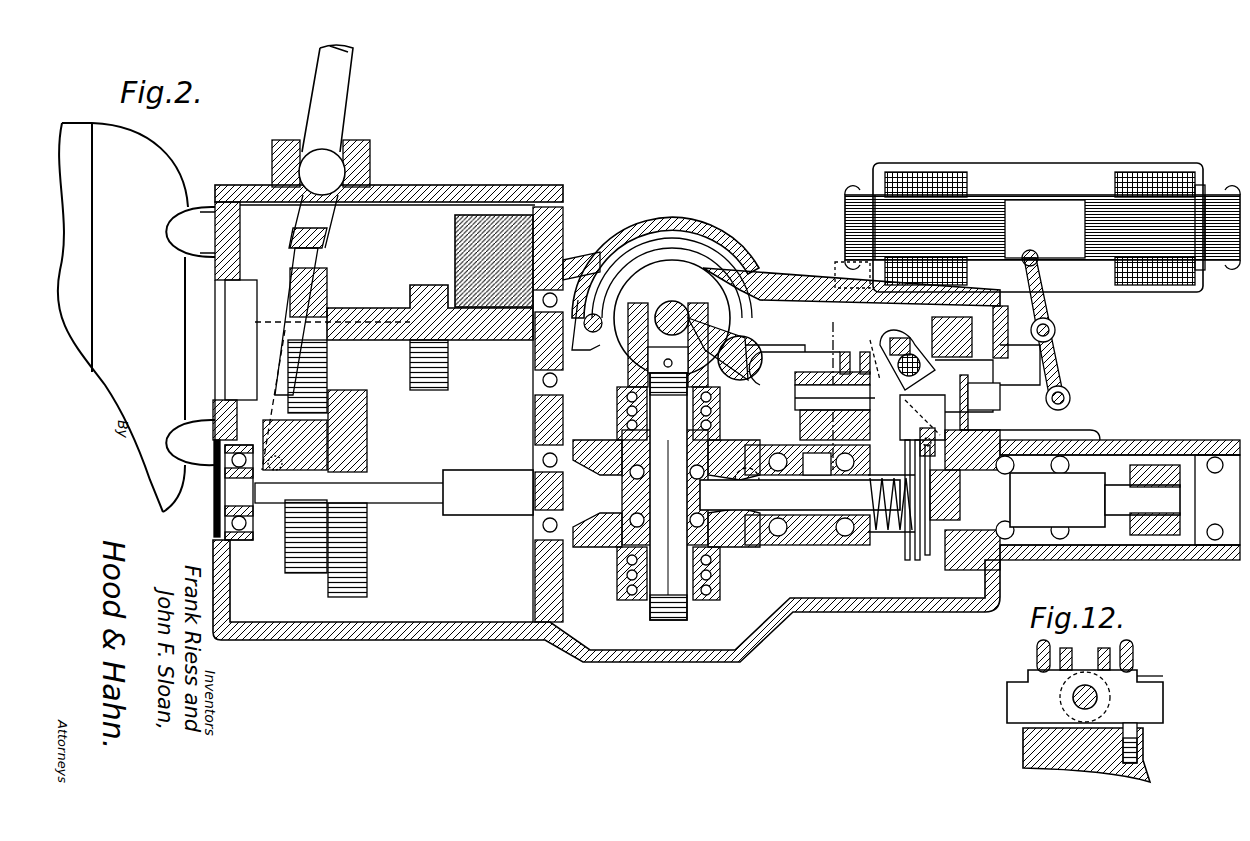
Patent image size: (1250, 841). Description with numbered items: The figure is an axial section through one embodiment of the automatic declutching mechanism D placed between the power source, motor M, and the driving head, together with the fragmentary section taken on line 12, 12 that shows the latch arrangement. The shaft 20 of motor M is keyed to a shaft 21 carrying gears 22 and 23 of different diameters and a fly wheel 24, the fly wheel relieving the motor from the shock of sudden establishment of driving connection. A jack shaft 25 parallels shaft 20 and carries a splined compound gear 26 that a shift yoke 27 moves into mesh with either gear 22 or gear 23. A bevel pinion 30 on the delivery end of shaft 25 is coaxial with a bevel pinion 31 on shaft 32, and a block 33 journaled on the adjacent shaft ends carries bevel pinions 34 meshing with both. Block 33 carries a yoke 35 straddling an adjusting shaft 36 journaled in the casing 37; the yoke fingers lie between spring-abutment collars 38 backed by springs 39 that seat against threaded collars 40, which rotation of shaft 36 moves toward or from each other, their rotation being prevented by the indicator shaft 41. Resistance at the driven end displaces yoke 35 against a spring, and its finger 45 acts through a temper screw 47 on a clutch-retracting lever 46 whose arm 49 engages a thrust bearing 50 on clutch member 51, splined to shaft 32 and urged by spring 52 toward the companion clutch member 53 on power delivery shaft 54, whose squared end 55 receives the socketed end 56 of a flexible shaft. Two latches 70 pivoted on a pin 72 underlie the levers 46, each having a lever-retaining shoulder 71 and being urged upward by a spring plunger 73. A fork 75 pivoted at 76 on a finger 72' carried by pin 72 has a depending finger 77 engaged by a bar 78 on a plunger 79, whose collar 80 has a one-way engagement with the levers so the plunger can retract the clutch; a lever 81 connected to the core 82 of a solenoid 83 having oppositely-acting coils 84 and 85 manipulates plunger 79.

In FIG. 2, the power source (motor) M is at (160, 170).
In FIG. 2, the declutching mechanism D is at (790, 278).
In FIG. 2, the section line 12 is at (824, 337).
In FIG. 2, the shaft 20 is at (348, 330).
In FIG. 2, the shaft 21 is at (392, 305).
In FIG. 2, the gear 22 is at (335, 278).
In FIG. 2, the gear 23 is at (428, 285).
In FIG. 2, the fly wheel 24 is at (483, 215).
In FIG. 2, the jack shaft 25 is at (462, 503).
In FIG. 2, the compound gear 26 is at (332, 560).
In FIG. 2, the shift yoke 27 is at (326, 222).
In FIG. 2, the bevel pinion 30 is at (590, 555).
In FIG. 2, the bevel pinion 31 is at (748, 555).
In FIG. 2, the shaft 32 is at (800, 489).
In FIG. 2, the block 33 is at (668, 600).
In FIG. 2, the bevel pinions 34 is at (618, 410).
In FIG. 2, the yoke 35 is at (700, 325).
In FIG. 2, the adjusting shaft 36 is at (672, 300).
In FIG. 2, the casing 37 is at (580, 662).
In FIG. 2, the spring-abutment collars 38 is at (720, 290).
In FIG. 2, the springs 39 is at (690, 270).
In FIG. 2, the collar 40 is at (656, 262).
In FIG. 2, the indicator shaft 41 is at (593, 312).
In FIG. 2, the finger 45 is at (790, 348).
In FIG. 2, the clutch-retracting lever 46 is at (790, 385).
In FIG. 12, the clutch-retracting lever 46 is at (1035, 650).
In FIG. 2, the temper screw 47 is at (812, 300).
In FIG. 2, the arm 49 is at (1050, 436).
In FIG. 2, the thrust bearing 50 is at (920, 438).
In FIG. 2, the clutch member 51 is at (930, 520).
In FIG. 2, the spring 52 is at (905, 530).
In FIG. 2, the companion clutch member 53 is at (990, 560).
In FIG. 2, the power delivery shaft 54 is at (1095, 478).
In FIG. 2, the squared end 55 is at (1145, 490).
In FIG. 2, the socketed end 56 is at (1185, 535).
In FIG. 2, the latch 70 is at (810, 378).
In FIG. 12, the latch 70 is at (1008, 712).
In FIG. 12, the lever-retaining shoulder 71 is at (1140, 676).
In FIG. 2, the pin 72 is at (811, 415).
In FIG. 12, the pin 72 is at (1128, 697).
In FIG. 2, the finger 72' is at (897, 350).
In FIG. 12, the spring plunger 73 is at (1023, 745).
In FIG. 2, the fork 75 is at (832, 362).
In FIG. 12, the fork 75 is at (1098, 658).
In FIG. 2, the pivot 76 is at (922, 350).
In FIG. 2, the depending finger 77 is at (962, 392).
In FIG. 2, the bar 78 is at (913, 417).
In FIG. 2, the plunger 79 is at (984, 396).
In FIG. 2, the collar 80 is at (998, 366).
In FIG. 2, the lever 81 is at (1054, 365).
In FIG. 2, the core 82 is at (1098, 215).
In FIG. 2, the solenoid 83 is at (1130, 175).
In FIG. 2, the coil 84 is at (1175, 192).
In FIG. 2, the coil 85 is at (925, 172).